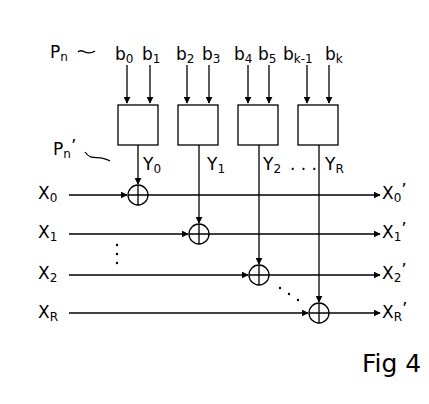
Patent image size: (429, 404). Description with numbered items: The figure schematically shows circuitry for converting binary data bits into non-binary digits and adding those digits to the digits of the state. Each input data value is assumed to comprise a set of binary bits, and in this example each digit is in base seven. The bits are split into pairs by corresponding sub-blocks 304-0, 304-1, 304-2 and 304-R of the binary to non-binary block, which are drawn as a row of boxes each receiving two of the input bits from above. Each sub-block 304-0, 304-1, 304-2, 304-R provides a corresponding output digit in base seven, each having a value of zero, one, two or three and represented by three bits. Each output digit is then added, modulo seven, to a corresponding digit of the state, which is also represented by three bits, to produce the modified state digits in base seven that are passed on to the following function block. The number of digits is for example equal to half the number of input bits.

The sub-block 304-0 is at (127, 118).
The sub-block 304-1 is at (181, 115).
The sub-block 304-2 is at (245, 115).
The sub-block 304-R is at (327, 120).